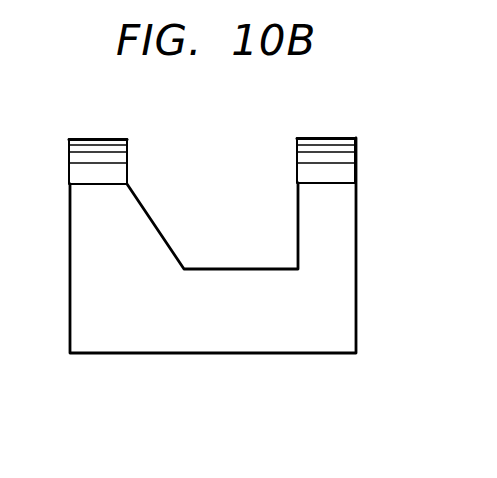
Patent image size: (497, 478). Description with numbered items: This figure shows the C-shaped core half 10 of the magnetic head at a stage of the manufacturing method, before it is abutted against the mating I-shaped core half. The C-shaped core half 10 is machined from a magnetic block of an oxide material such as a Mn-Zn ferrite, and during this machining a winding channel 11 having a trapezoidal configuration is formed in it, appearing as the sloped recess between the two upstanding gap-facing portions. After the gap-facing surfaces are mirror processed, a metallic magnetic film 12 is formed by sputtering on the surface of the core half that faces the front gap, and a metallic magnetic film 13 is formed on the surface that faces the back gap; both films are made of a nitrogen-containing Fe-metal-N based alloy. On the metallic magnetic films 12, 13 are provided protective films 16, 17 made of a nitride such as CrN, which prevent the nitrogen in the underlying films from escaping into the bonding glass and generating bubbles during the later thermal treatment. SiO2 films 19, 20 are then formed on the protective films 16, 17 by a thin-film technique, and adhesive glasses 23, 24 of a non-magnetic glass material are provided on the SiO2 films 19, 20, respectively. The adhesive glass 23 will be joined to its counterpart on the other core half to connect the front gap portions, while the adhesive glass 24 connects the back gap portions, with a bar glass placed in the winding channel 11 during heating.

The C-shaped core half 10 is at (337, 273).
The winding channel 11 is at (257, 231).
The metallic magnetic film 12 is at (75, 178).
The metallic magnetic film 13 is at (345, 171).
The protective film 16 is at (75, 159).
The protective film 17 is at (348, 155).
The SiO2 film 19 is at (73, 148).
The SiO2 film 20 is at (355, 147).
The adhesive glass 23 is at (73, 142).
The adhesive glass 24 is at (357, 137).